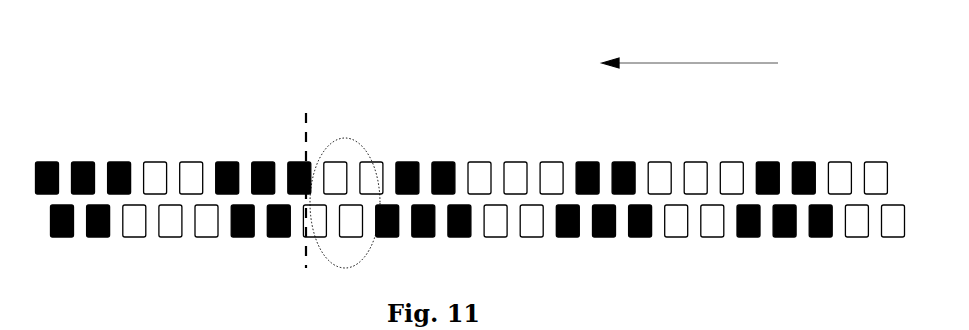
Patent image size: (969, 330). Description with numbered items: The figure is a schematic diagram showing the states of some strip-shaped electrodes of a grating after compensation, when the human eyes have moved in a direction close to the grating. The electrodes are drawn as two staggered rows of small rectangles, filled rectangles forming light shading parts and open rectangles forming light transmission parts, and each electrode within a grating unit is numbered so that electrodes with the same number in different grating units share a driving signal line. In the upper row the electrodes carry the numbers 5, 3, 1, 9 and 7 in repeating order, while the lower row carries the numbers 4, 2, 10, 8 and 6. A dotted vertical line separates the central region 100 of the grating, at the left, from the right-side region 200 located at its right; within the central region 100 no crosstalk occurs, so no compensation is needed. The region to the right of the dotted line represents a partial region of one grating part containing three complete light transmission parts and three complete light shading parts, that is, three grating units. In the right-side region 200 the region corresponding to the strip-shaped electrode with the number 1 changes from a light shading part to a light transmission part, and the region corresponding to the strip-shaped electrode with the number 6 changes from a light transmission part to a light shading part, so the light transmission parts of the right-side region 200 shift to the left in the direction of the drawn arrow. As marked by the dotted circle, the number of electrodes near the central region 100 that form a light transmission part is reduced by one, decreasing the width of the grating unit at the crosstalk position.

The central region 100 is at (150, 103).
The right-side region 200 is at (447, 118).
The strip-shaped electrode with the number 1 is at (119, 170).
The strip-shaped electrode with the number 2 is at (98, 231).
The strip-shaped electrode with the number 3 is at (83, 170).
The strip-shaped electrode with the number 4 is at (62, 231).
The strip-shaped electrode with the number 5 is at (47, 170).
The strip-shaped electrode with the number 6 is at (206, 231).
The strip-shaped electrode with the number 7 is at (191, 170).
The strip-shaped electrode with the number 8 is at (170, 231).
The strip-shaped electrode with the number 9 is at (155, 170).
The strip-shaped electrode with the number 10 is at (134, 231).